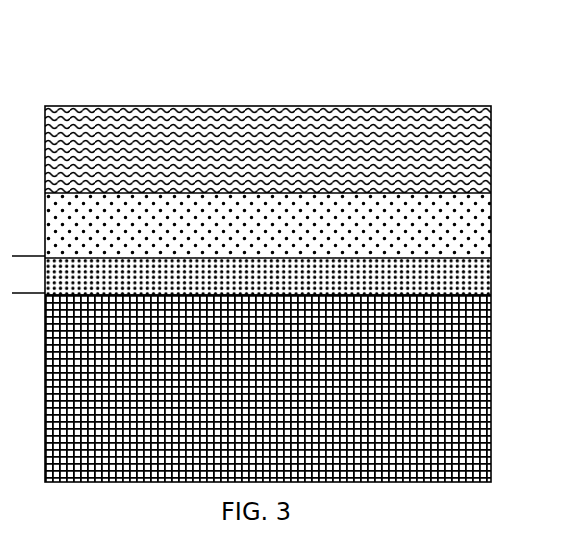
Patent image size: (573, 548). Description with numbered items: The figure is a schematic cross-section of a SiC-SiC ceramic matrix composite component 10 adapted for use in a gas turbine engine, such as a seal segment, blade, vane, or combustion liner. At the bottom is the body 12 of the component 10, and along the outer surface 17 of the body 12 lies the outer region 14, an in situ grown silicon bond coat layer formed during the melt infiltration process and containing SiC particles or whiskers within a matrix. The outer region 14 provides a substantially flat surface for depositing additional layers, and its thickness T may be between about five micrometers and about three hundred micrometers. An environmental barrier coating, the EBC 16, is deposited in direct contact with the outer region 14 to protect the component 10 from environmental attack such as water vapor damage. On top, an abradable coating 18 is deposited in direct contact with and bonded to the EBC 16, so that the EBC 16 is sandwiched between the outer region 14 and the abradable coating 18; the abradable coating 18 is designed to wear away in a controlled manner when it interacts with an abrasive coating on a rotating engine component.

The component 10 is at (72, 71).
The body 12 is at (484, 374).
The outer region 14 is at (484, 261).
The EBC 16 is at (484, 215).
The outer surface 17 is at (484, 277).
The abradable coating 18 is at (484, 150).
The thickness T is at (28, 274).